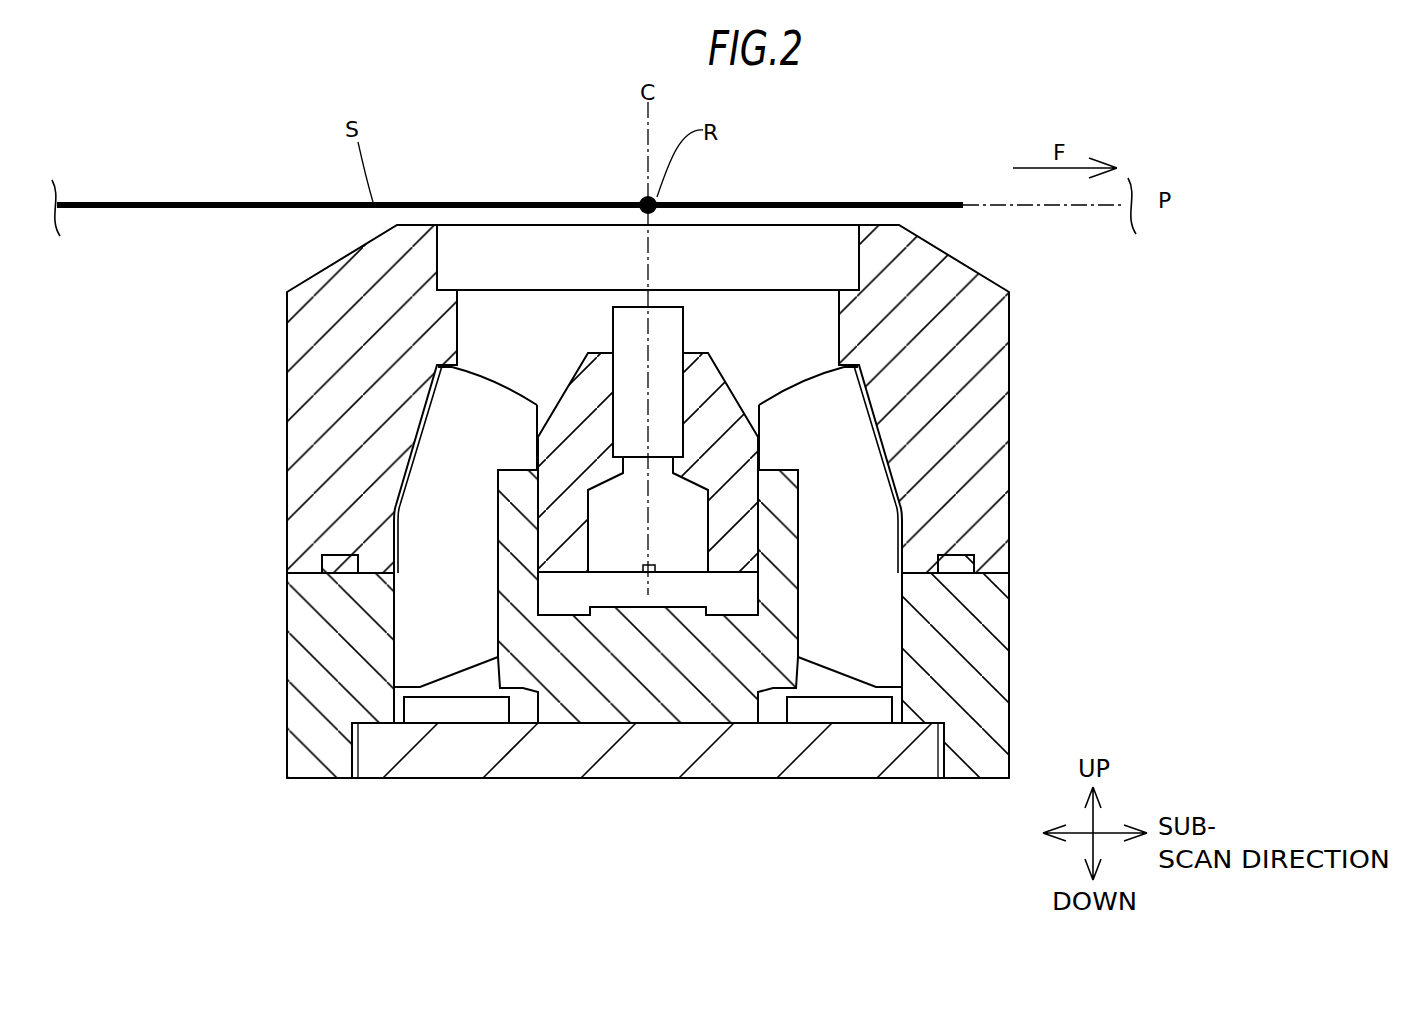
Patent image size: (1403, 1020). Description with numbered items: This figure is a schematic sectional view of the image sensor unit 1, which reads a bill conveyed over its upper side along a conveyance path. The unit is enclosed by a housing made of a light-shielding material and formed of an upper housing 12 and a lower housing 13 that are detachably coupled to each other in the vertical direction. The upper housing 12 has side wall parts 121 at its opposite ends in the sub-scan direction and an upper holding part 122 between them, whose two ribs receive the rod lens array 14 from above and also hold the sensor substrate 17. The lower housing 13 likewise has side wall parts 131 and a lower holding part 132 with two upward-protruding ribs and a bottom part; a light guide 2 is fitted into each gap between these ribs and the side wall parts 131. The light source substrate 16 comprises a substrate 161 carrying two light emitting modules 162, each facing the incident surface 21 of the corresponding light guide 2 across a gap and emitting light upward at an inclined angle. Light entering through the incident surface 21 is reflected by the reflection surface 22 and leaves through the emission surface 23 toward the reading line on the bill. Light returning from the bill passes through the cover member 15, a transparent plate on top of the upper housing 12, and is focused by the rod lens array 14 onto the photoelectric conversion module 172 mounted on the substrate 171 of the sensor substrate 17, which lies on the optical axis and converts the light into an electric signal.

The image sensor unit 1 is at (292, 856).
The light guide 2 is at (422, 502).
The upper housing 12 is at (577, 358).
The side wall parts 121 is at (286, 312).
The upper holding part 122 is at (740, 385).
The lower housing 13 is at (626, 565).
The side wall parts 131 is at (287, 655).
The lower holding part 132 is at (785, 525).
The rod lens array 14 is at (627, 310).
The cover member 15 is at (552, 252).
The light source substrate 16 is at (674, 805).
The substrate 161 is at (793, 778).
The light emitting modules 162 is at (445, 712).
The sensor substrate 17 is at (685, 820).
The substrate 171 is at (613, 592).
The photoelectric conversion module 172 is at (645, 575).
The incident surface 21 is at (468, 672).
The reflection surface 22 is at (417, 450).
The emission surface 23 is at (481, 380).